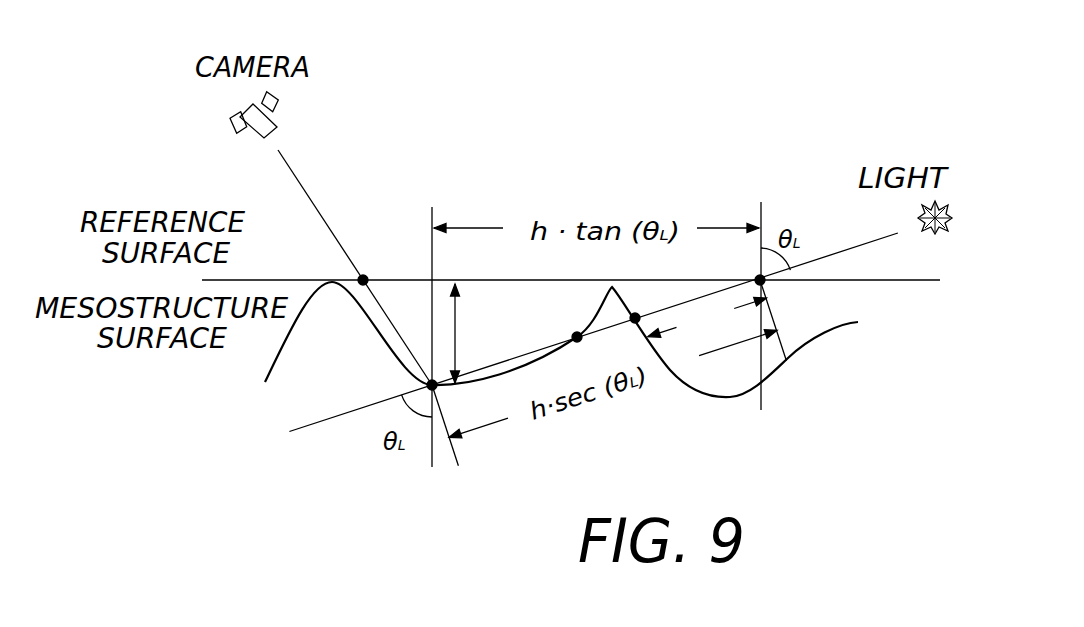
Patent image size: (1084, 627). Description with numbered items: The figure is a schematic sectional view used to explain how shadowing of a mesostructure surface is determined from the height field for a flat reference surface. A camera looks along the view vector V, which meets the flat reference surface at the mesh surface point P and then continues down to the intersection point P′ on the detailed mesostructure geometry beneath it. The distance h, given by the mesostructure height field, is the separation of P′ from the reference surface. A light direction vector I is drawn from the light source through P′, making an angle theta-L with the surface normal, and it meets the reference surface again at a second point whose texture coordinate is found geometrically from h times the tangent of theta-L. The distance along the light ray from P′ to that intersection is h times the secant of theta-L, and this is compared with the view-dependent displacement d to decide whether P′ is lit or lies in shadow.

The mesh surface point P is at (370, 261).
The intersection point on the detailed geometry P′ is at (449, 399).
The distance from P' to the surface h is at (457, 333).
The view-dependent displacement d is at (707, 317).
The view vector V is at (343, 176).
The light direction vector I is at (873, 206).